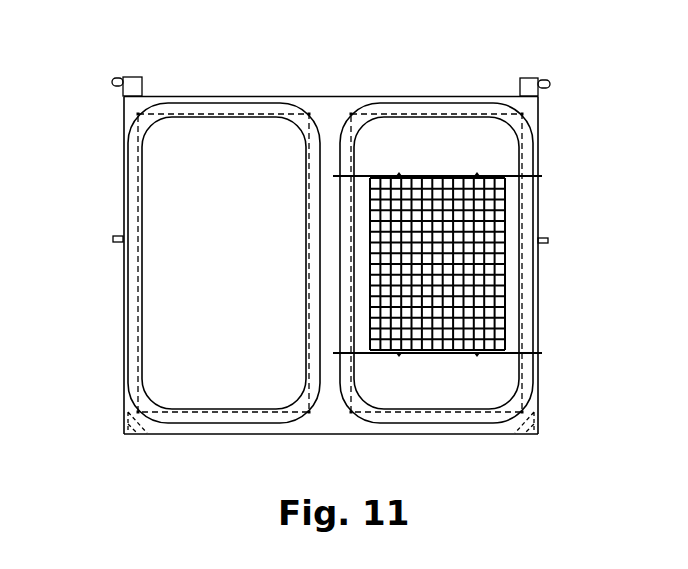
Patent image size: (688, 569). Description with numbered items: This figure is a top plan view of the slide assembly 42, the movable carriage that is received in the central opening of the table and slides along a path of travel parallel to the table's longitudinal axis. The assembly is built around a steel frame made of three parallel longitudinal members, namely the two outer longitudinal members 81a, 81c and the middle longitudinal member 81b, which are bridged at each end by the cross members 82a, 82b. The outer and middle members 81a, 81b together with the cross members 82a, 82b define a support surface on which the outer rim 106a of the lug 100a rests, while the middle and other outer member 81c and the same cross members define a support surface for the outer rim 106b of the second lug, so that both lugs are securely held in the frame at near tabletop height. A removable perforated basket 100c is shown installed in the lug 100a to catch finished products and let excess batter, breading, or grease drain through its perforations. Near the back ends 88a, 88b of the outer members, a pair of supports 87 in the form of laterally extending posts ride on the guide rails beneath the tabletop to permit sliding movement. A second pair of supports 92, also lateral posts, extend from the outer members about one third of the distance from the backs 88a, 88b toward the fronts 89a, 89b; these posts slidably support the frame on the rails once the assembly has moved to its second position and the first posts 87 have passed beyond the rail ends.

The slide assembly 42 is at (351, 80).
The outer longitudinal member 81a is at (528, 118).
The middle longitudinal member 81b is at (330, 133).
The outer longitudinal member 81c is at (123, 172).
The cross member 82a is at (330, 423).
The cross member 82b is at (313, 103).
The support 87 is at (119, 78).
The back end 88a is at (528, 78).
The back end 88b is at (137, 77).
The front 89a is at (533, 435).
The front 89b is at (129, 435).
The second support 92 is at (118, 242).
The lug 100a is at (453, 375).
The removable perforated basket 100c is at (460, 268).
The outer rim 106a is at (398, 418).
The outer rim 106b is at (210, 417).